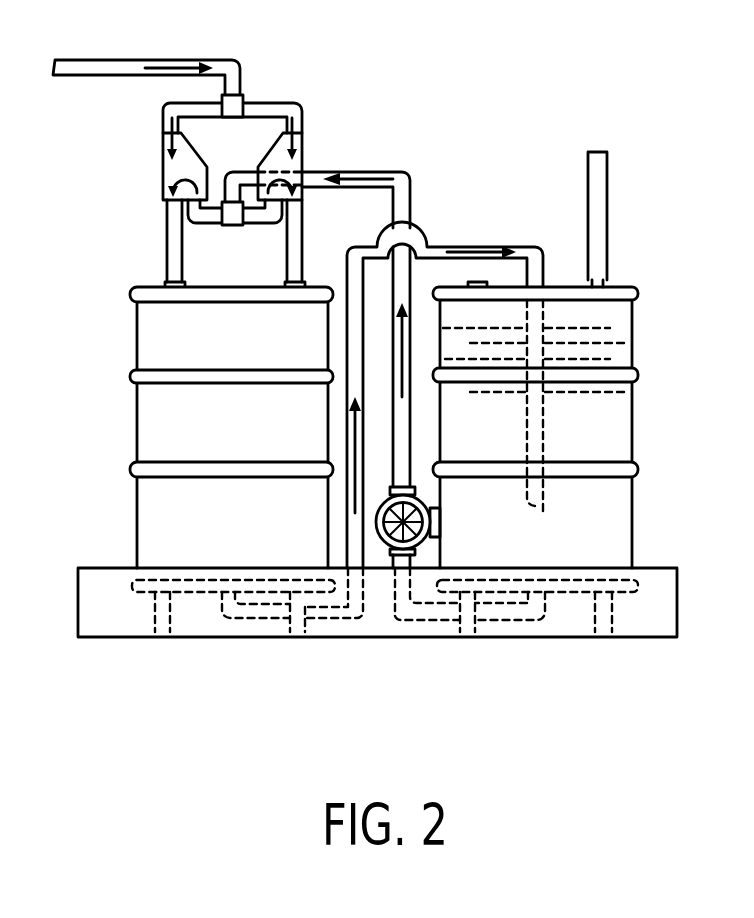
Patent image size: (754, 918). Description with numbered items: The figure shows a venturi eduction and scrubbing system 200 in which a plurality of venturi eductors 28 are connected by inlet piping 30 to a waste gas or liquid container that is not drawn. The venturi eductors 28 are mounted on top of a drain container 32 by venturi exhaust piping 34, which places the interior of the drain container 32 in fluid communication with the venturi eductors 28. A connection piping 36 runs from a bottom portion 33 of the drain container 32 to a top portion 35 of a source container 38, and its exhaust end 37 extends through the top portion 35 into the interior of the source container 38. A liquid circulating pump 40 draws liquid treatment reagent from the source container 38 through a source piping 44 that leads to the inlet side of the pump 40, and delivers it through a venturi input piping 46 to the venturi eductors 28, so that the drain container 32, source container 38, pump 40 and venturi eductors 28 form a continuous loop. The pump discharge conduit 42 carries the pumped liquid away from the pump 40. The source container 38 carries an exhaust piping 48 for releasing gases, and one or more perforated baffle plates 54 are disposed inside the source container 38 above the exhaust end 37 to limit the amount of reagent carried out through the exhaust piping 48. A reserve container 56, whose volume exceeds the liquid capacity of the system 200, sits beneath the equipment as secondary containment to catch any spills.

The venturi eduction and scrubbing system 200 is at (598, 88).
The inlet piping 30 is at (128, 60).
The venturi eductors 28 is at (163, 155).
The venturi exhaust piping 34 is at (167, 236).
The drain container 32 is at (137, 336).
The bottom portion 33 is at (210, 593).
The connection piping 36 is at (342, 630).
The venturi input piping 46 is at (410, 197).
The liquid circulating pump 40 is at (428, 537).
The pump discharge conduit 42 is at (412, 553).
The source piping 44 is at (517, 620).
The top portion 35 is at (622, 287).
The source container 38 is at (632, 333).
The baffle plates 54 is at (570, 395).
The exhaust end 37 is at (533, 506).
The exhaust piping 48 is at (607, 203).
The reserve container 56 is at (677, 587).